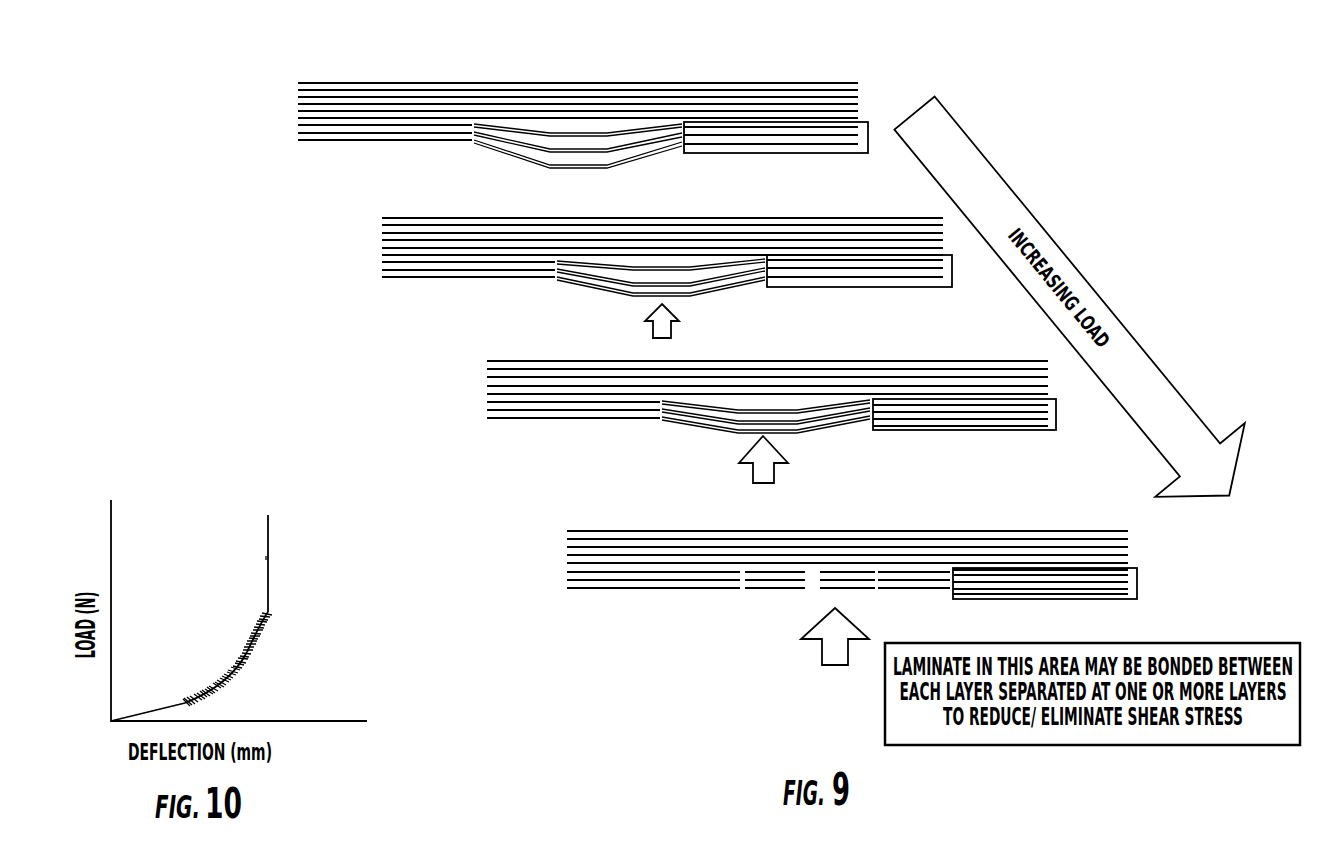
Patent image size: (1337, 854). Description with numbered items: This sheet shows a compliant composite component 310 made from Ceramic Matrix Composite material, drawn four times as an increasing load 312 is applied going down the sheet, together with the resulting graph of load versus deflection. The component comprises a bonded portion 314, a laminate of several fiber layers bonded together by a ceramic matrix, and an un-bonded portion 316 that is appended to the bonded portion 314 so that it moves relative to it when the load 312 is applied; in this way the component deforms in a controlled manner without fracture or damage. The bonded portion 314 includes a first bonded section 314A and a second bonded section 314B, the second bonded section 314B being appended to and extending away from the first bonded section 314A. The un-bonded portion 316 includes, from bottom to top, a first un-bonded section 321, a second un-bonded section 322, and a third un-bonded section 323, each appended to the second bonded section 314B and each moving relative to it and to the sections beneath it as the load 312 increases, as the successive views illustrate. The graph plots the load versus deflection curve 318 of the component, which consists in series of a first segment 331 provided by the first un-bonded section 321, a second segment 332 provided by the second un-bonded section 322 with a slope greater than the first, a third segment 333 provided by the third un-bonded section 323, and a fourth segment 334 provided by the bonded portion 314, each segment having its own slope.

In FIG. 9, the compliant composite component 310 is at (878, 102).
In FIG. 9, the load 312 is at (668, 333).
In FIG. 9, the bonded portion 314 is at (653, 76).
In FIG. 9, the first bonded section 314A is at (752, 102).
In FIG. 9, the second bonded section 314B is at (320, 133).
In FIG. 9, the un-bonded portion 316 is at (662, 168).
In FIG. 10, the load vs. deflection curve 318 is at (280, 557).
In FIG. 9, the first un-bonded section 321 is at (583, 170).
In FIG. 9, the second un-bonded section 322 is at (510, 145).
In FIG. 9, the third un-bonded section 323 is at (500, 128).
In FIG. 10, the first segment 331 is at (145, 712).
In FIG. 10, the second segment 332 is at (217, 688).
In FIG. 10, the third segment 333 is at (257, 642).
In FIG. 10, the fourth segment 334 is at (268, 555).